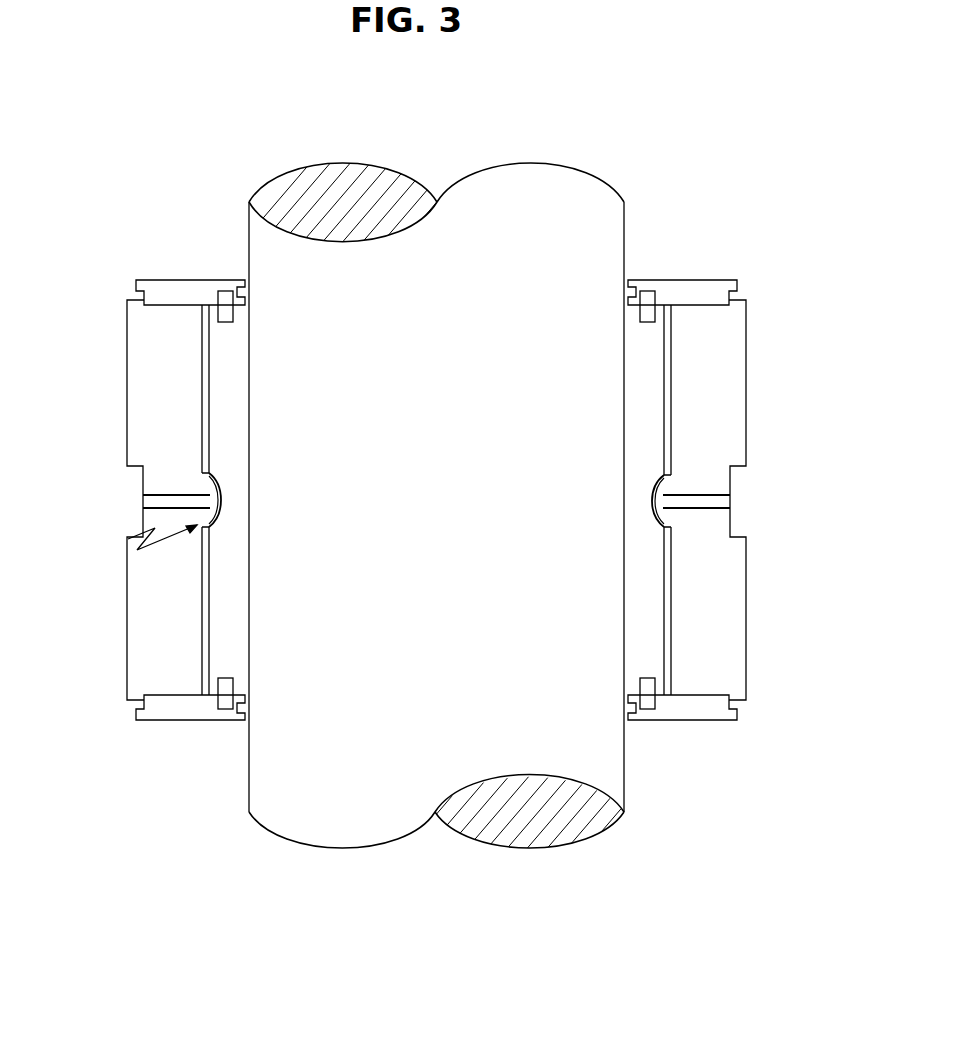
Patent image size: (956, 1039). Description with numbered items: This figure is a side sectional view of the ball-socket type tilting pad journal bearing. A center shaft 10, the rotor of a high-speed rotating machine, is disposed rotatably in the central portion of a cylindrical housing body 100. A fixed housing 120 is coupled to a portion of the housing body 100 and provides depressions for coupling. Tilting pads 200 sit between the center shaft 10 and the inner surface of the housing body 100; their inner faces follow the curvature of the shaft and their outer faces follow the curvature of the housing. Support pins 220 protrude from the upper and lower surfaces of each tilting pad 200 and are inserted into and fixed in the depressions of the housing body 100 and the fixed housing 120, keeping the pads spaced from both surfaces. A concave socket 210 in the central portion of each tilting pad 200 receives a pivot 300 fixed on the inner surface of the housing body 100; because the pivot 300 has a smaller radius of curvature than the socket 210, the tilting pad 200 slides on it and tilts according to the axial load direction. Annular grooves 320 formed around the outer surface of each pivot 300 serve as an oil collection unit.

The center shaft 10 is at (290, 762).
The housing body 100 is at (707, 633).
The fixed housing 120 is at (687, 290).
The tilting pad 200 is at (635, 423).
The socket 210 is at (217, 477).
The support pin 220 is at (225, 293).
The pivot 300 is at (128, 539).
The groove 320 is at (203, 488).